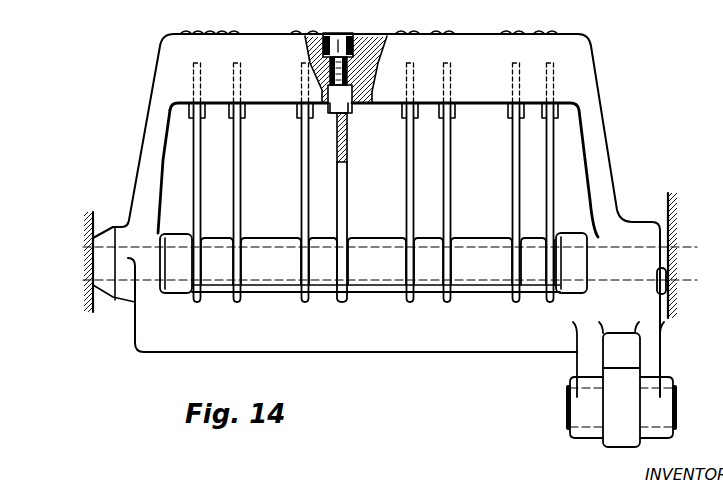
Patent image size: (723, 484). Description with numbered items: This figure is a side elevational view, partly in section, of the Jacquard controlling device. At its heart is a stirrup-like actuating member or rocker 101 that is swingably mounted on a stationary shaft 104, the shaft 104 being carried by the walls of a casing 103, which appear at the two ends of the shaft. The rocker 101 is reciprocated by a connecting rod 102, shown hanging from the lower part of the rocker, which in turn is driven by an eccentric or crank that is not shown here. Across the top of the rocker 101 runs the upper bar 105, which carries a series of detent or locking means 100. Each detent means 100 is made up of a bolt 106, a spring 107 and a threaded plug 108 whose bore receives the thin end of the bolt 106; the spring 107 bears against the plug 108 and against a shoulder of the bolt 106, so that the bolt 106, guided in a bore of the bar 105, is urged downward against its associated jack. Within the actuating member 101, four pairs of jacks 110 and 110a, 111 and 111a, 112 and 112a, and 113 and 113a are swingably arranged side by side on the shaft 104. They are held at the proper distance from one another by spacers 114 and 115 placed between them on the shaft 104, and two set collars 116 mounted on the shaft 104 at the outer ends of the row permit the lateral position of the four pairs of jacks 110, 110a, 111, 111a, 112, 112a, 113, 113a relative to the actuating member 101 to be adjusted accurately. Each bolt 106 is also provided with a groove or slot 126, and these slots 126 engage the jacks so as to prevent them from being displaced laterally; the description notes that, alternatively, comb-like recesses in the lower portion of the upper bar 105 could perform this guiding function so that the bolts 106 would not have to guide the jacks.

The detent or locking means 100 is at (258, 111).
The actuating member 101 is at (607, 178).
The connecting rod 102 is at (614, 440).
The casing 103 is at (91, 298).
The shaft 104 is at (695, 254).
The upper bar 105 is at (477, 48).
The bolt 106 is at (340, 99).
The spring 107 is at (349, 69).
The threaded plug 108 is at (350, 33).
The jack 110 is at (197, 193).
The jack 110a is at (243, 162).
The jack 111 is at (306, 174).
The jack 111a is at (346, 228).
The jack 112 is at (411, 202).
The jack 112a is at (450, 227).
The jack 113 is at (520, 182).
The jack 113a is at (558, 187).
The spacer 114 is at (219, 239).
The spacer 115 is at (283, 239).
The set collar 116 is at (180, 240).
The groove or slot 126 is at (350, 110).